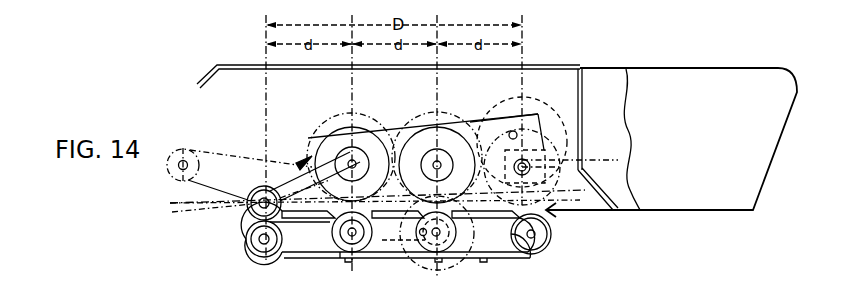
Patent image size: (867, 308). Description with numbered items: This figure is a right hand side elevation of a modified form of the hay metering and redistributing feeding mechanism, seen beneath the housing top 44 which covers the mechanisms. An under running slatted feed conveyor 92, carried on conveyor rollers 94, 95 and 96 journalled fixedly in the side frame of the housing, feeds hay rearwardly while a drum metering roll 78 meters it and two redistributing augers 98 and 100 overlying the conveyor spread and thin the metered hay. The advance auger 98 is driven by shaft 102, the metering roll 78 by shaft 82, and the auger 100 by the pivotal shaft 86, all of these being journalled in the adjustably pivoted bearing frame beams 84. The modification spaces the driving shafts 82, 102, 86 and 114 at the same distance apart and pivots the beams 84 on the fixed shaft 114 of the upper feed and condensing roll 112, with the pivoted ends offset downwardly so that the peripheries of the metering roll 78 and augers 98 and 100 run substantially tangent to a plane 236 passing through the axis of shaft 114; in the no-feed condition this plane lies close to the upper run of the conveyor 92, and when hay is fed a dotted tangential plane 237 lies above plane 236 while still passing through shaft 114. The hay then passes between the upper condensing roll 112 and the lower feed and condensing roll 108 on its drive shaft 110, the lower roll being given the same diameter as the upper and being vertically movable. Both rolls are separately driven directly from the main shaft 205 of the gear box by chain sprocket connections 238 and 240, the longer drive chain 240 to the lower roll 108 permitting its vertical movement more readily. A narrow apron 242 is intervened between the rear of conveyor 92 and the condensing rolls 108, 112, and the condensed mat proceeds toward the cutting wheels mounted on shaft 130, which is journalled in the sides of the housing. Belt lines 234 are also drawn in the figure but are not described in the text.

The housing top 44 is at (568, 67).
The metering roll 78 is at (575, 128).
The drive shaft of metering wheel 82 is at (546, 152).
The bearing frame beams 84 is at (540, 118).
The pivotal shaft 86 is at (357, 158).
The slatted feed conveyor 92 is at (506, 258).
The conveyor roller 94 is at (542, 234).
The conveyor roller 95 is at (450, 232).
The conveyor roller 96 is at (352, 243).
The advance auger 98 is at (448, 135).
The auger 100 is at (357, 130).
The drive shaft of advance auger 102 is at (437, 147).
The lower feed and condensing roll 108 is at (253, 252).
The drive shaft of lower condensing roll 110 is at (262, 247).
The upper feed and condensing roll 112 is at (250, 192).
The drive shaft of upper condensing roll 114 is at (252, 212).
The cutting wheel shaft 130 is at (184, 158).
The main shaft of gear box 205 is at (425, 236).
The drive belt 234 is at (305, 162).
The tangential plane 236 is at (172, 202).
The tangential plane 237 is at (616, 162).
The chain sprocket connection 238 is at (393, 240).
The drive chain 240 is at (383, 242).
The narrow apron 242 is at (312, 222).